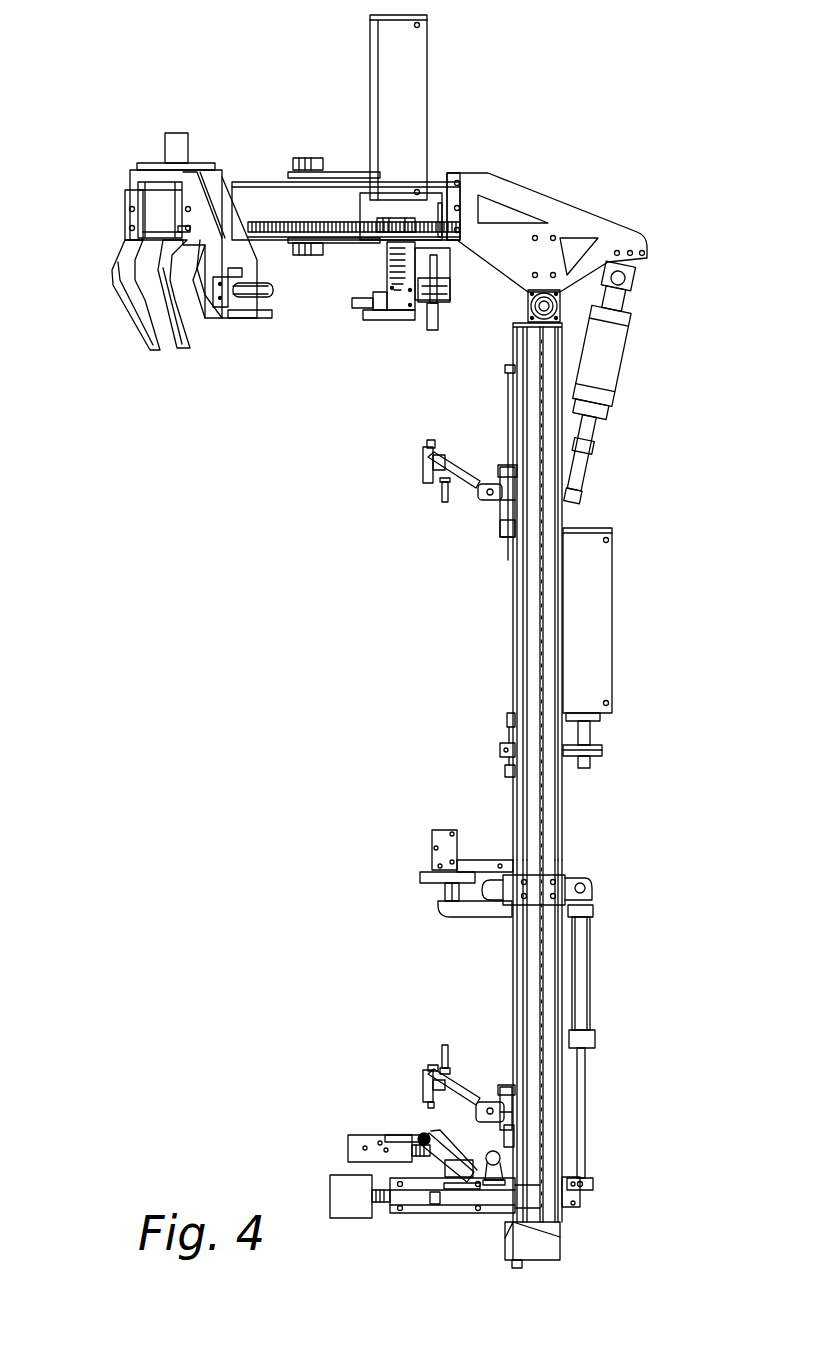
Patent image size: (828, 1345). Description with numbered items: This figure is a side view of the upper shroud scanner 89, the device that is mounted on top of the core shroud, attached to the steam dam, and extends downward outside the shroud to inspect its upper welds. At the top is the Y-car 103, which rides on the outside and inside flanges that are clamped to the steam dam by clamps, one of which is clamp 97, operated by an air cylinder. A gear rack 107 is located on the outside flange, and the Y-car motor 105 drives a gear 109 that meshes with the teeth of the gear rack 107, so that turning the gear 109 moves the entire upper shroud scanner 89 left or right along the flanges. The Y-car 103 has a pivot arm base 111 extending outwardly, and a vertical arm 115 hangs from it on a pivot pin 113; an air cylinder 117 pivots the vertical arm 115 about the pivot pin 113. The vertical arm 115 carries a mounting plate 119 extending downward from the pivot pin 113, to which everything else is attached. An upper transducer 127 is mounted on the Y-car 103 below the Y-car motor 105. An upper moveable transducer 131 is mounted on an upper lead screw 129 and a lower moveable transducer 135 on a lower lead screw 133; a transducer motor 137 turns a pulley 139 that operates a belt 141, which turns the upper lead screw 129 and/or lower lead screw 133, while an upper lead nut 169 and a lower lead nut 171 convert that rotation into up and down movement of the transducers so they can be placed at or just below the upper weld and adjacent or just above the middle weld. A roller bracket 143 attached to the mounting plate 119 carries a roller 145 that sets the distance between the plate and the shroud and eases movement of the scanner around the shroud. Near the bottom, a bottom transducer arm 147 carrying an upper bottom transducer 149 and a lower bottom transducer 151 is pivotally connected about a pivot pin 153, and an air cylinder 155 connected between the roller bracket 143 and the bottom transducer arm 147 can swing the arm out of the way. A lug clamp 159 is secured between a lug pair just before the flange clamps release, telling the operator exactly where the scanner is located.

The upper shroud scanner 89 is at (531, 95).
The clamp 97 is at (112, 331).
The Y-car 103 is at (253, 180).
The Y-car motor 105 is at (427, 58).
The gear rack 107 is at (263, 225).
The gear 109 is at (392, 227).
The pivot arm base 111 is at (545, 198).
The pivot pin 113 is at (528, 305).
The vertical arm 115 is at (579, 1256).
The air cylinder 117 is at (635, 345).
The mounting plate 119 is at (562, 812).
The upper transducer 127 is at (383, 316).
The upper lead screw 129 is at (513, 635).
The upper moveable transducer 131 is at (425, 460).
The lower lead screw 133 is at (513, 997).
The lower moveable transducer 135 is at (424, 1085).
The transducer motor 137 is at (612, 615).
The pulley 139 is at (600, 748).
The belt 141 is at (565, 762).
The roller bracket 143 is at (430, 843).
The roller 145 is at (420, 876).
The bottom transducer arm 147 is at (435, 1213).
The upper bottom transducer 149 is at (347, 1150).
The lower bottom transducer 151 is at (345, 1218).
The pivot pin 153 is at (490, 1150).
The air cylinder 155 is at (596, 965).
The lug clamp 159 is at (432, 332).
The upper lead nut 169 is at (505, 467).
The lower lead nut 171 is at (500, 1087).